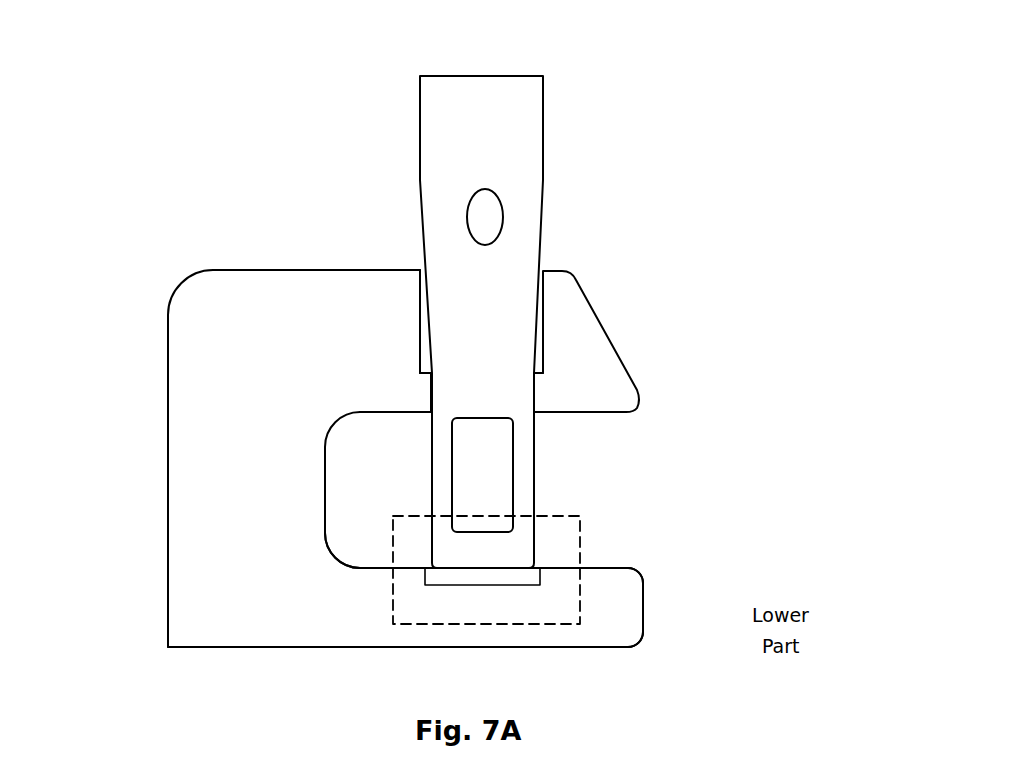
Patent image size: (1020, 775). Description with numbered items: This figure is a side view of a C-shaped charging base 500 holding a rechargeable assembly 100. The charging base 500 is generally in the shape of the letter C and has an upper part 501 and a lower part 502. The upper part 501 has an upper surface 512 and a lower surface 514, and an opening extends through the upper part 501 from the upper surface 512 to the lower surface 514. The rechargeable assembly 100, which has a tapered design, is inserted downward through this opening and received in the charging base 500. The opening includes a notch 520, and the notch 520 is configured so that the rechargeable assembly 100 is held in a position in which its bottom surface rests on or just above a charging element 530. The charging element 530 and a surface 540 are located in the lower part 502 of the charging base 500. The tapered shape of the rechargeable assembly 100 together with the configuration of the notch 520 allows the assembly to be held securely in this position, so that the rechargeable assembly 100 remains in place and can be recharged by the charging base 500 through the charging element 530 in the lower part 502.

The rechargeable assembly 100 is at (582, 130).
The charging base 500 is at (155, 262).
The upper part 501 is at (377, 310).
The lower part 502 is at (597, 615).
The upper surface 512 is at (559, 268).
The lower surface 514 is at (577, 413).
The notch 520 is at (432, 373).
The charging element 530 is at (467, 572).
The surface 540 is at (593, 568).